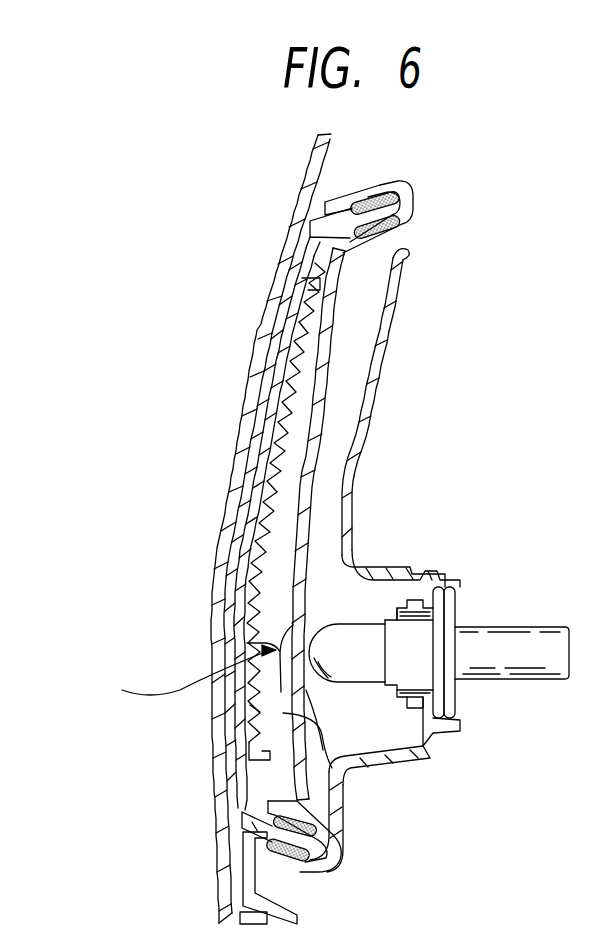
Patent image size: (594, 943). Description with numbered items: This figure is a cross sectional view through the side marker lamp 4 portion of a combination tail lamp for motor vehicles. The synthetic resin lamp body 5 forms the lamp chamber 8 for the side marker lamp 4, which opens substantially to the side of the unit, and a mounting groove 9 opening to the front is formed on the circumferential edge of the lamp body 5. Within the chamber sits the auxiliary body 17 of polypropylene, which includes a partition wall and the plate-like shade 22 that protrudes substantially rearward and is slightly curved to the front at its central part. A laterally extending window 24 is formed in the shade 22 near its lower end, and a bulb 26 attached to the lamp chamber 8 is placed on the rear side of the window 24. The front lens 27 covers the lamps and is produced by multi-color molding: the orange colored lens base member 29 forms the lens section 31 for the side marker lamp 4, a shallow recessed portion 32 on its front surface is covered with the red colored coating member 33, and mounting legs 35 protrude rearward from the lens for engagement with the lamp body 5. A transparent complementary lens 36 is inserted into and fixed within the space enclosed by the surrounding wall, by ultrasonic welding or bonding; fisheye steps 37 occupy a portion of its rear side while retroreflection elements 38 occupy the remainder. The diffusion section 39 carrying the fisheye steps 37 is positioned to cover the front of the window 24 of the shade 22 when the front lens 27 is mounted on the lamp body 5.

The side marker lamp 4 is at (253, 660).
The lamp body 5 is at (405, 265).
The lamp chamber 8 is at (374, 376).
The mounting groove 9 is at (410, 218).
The auxiliary body 17 is at (336, 344).
The shade 22 is at (313, 527).
The window 24 is at (293, 625).
The bulb 26 is at (360, 626).
The front lens 27 is at (307, 173).
The lens base member 29 is at (295, 235).
The lens section 31 is at (249, 382).
The shallow recessed portion 32 is at (240, 425).
The coating member 33 is at (212, 697).
The mounting leg 35 is at (380, 193).
The complementary lens 36 is at (332, 776).
The fisheye steps 37 is at (292, 718).
The retroreflection elements 38 is at (283, 434).
The diffusion section 39 is at (180, 677).